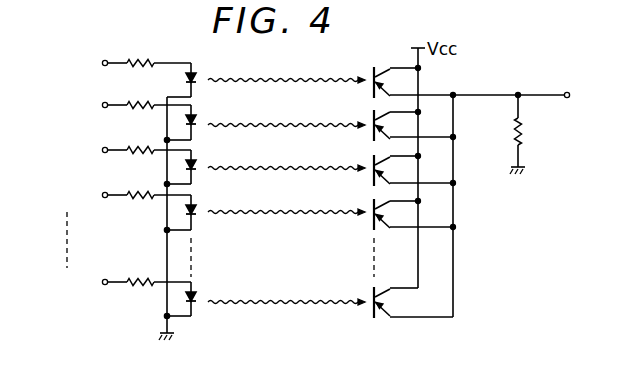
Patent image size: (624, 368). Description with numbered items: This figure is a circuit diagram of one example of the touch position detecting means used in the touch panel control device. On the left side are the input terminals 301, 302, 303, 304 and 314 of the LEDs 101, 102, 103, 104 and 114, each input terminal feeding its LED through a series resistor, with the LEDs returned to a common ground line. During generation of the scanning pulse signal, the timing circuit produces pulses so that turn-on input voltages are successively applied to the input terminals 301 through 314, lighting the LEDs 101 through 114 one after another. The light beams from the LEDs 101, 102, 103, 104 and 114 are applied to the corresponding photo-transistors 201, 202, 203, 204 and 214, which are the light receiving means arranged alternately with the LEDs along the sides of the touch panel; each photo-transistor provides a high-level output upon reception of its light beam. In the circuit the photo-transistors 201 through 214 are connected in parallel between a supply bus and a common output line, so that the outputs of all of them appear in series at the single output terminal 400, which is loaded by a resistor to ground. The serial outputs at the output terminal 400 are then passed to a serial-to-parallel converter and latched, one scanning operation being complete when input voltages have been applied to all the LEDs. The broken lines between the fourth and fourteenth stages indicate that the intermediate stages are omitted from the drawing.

The input terminal 301 is at (117, 63).
The input terminal 302 is at (117, 105).
The input terminal 303 is at (117, 150).
The input terminal 304 is at (117, 195).
The input terminal 314 is at (117, 282).
The LED 101 is at (284, 68).
The LED 102 is at (284, 113).
The LED 103 is at (284, 157).
The LED 104 is at (284, 200).
The LED 114 is at (284, 290).
The photo-transistor 201 is at (386, 76).
The photo-transistor 202 is at (386, 120).
The photo-transistor 203 is at (386, 164).
The photo-transistor 204 is at (386, 207).
The photo-transistor 214 is at (387, 296).
The output terminal 400 is at (520, 121).